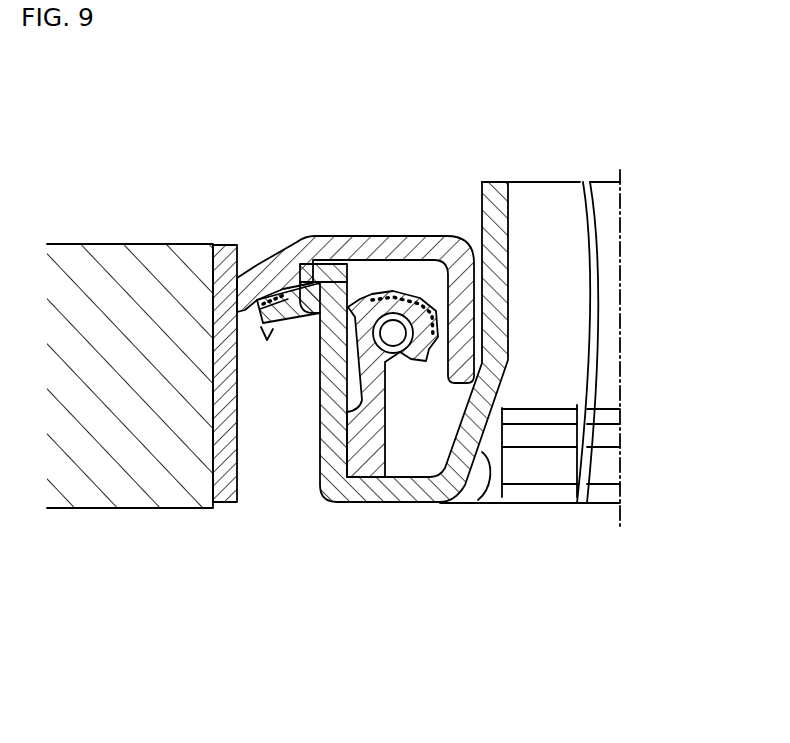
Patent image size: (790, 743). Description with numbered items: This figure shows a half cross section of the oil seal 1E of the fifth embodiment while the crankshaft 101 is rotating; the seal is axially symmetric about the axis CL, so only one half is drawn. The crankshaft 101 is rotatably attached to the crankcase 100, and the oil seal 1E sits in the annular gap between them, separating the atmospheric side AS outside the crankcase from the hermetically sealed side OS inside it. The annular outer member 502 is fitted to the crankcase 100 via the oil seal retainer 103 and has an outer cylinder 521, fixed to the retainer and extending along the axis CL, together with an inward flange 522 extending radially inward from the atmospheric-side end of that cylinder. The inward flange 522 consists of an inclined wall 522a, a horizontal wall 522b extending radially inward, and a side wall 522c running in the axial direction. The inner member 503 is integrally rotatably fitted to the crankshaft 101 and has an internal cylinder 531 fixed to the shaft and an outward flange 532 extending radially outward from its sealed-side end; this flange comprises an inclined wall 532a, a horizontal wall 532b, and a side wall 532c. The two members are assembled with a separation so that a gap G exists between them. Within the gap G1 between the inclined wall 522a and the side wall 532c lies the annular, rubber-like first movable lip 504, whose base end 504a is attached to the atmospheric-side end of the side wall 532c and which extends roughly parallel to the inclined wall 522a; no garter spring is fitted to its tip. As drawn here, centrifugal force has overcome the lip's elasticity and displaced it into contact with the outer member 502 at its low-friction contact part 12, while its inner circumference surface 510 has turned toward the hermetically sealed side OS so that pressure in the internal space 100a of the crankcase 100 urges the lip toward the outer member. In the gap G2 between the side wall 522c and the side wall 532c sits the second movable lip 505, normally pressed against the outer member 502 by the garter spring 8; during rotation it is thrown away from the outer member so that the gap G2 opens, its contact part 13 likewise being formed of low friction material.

The oil seal 1E is at (330, 118).
The crankcase 100 is at (95, 244).
The internal space 100a is at (182, 646).
The crankshaft 101 is at (550, 205).
The oil seal retainer 103 is at (155, 258).
The outer member 502 is at (333, 139).
The outer cylinder 521 is at (222, 345).
The inward flange 522 is at (308, 238).
The inclined wall 522a is at (280, 254).
The horizontal wall 522b is at (390, 242).
The side wall 522c is at (482, 247).
The contact part 12 is at (267, 291).
The contact part 13 is at (436, 311).
The garter spring 8 is at (407, 366).
The inner member 503 is at (548, 592).
The first movable lip 504 is at (267, 340).
The base end 504a is at (320, 303).
The second movable lip 505 is at (438, 345).
The inner circumference surface 510 is at (282, 322).
The internal cylinder 531 is at (508, 363).
The outward flange 532 is at (413, 510).
The inclined wall 532a is at (482, 490).
The horizontal wall 532b is at (365, 505).
The side wall 532c is at (320, 425).
The gap G is at (340, 260).
The gap G1 is at (298, 327).
The gap G2 is at (326, 505).
The atmospheric side AS is at (427, 73).
The hermetically sealed side OS is at (410, 647).
The axis CL is at (619, 350).